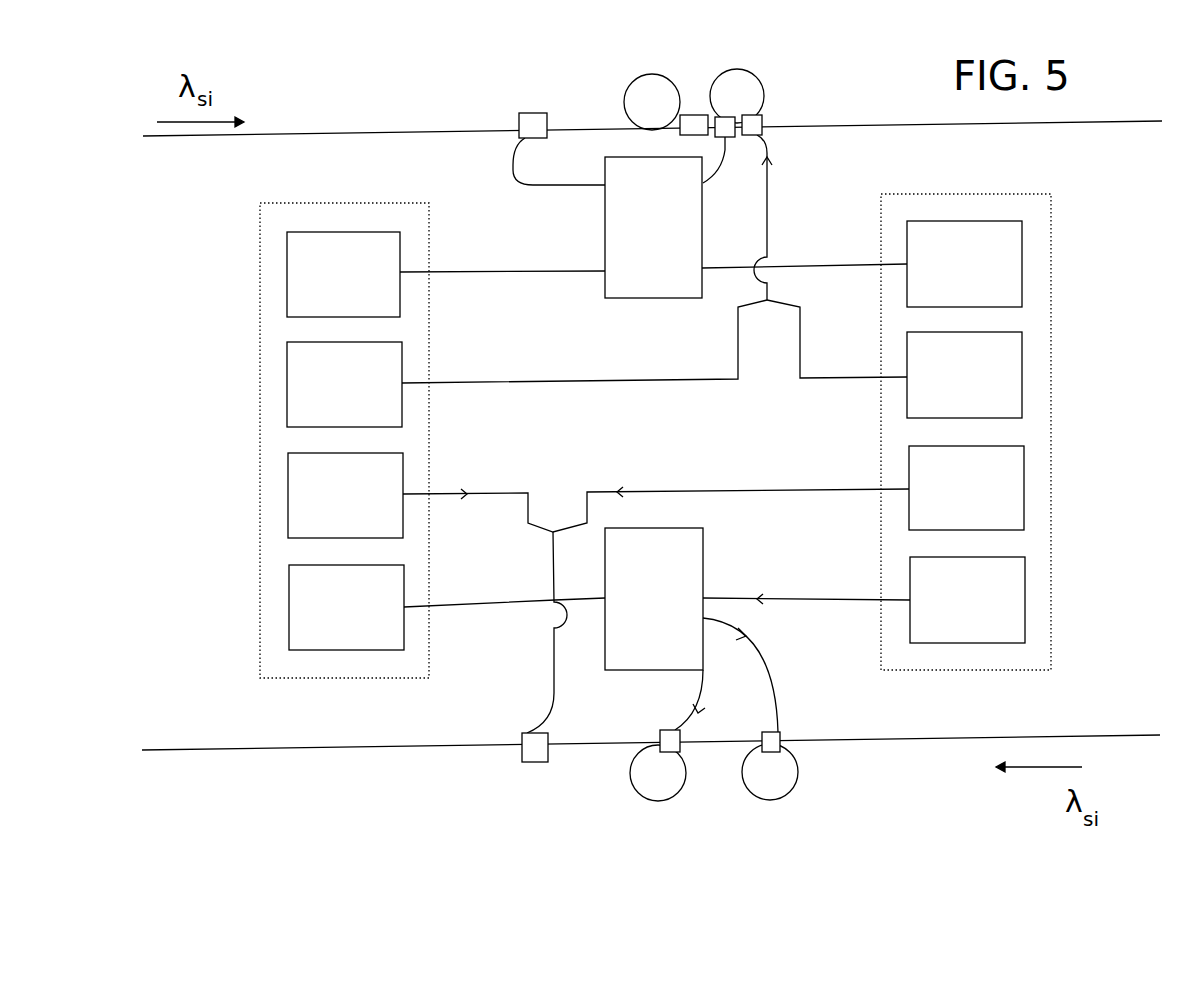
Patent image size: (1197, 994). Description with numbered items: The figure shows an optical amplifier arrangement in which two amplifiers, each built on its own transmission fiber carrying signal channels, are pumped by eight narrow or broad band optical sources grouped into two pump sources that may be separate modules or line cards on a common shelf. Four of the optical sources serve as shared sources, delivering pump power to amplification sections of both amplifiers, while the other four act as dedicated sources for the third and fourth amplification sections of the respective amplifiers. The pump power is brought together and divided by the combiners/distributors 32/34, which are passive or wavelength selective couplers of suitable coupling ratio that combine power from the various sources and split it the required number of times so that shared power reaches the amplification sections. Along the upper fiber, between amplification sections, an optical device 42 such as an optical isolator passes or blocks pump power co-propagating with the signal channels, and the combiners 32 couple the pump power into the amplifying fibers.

The combiner 32 is at (532, 113).
The distributor 34 is at (653, 300).
The optical device 42 is at (693, 115).